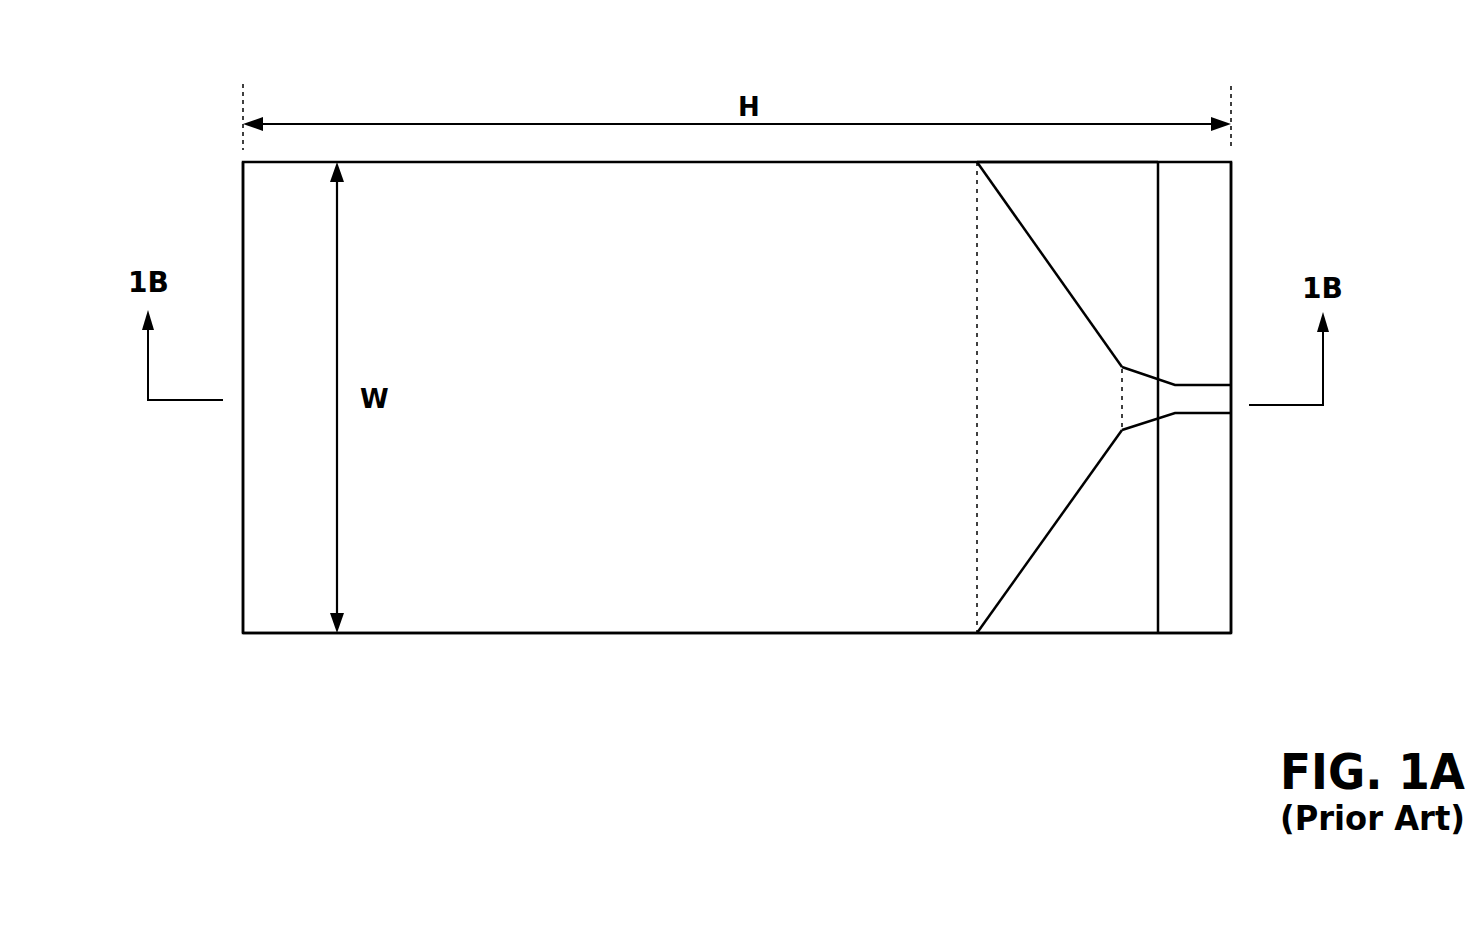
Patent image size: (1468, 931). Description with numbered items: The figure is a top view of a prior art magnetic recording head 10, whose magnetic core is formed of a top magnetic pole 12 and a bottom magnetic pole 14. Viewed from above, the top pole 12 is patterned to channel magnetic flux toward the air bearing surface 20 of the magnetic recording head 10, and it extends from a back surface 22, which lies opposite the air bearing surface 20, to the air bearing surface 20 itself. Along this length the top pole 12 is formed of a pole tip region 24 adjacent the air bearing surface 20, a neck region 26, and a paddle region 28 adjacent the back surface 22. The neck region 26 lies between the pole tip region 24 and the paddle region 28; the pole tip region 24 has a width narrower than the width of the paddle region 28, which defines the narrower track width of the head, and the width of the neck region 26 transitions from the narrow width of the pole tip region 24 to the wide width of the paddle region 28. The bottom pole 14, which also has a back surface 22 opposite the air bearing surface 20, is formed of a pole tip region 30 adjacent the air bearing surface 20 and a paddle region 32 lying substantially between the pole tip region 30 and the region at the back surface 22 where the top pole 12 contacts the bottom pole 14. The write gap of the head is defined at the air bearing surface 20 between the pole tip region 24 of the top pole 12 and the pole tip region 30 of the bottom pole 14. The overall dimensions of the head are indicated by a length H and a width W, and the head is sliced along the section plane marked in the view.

The magnetic recording head 10 is at (1280, 146).
The top magnetic pole 12 is at (465, 597).
The bottom magnetic pole 14 is at (1048, 598).
The air bearing surface 20 is at (1231, 544).
The back surface 22 is at (243, 540).
The pole tip region 24 is at (1163, 413).
The neck region 26 is at (1048, 413).
The paddle region 28 is at (940, 413).
The pole tip region 30 is at (1212, 616).
The paddle region 32 is at (1139, 616).